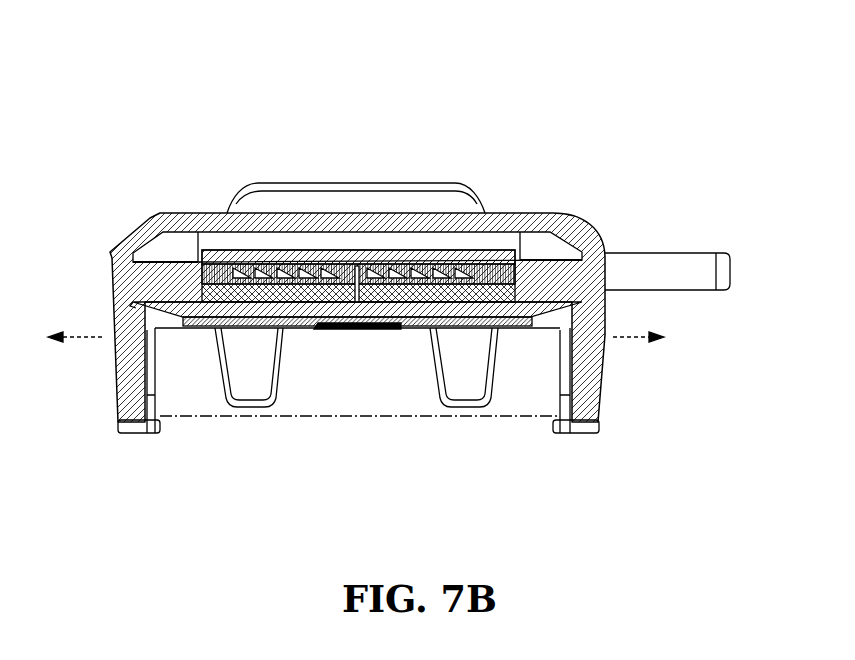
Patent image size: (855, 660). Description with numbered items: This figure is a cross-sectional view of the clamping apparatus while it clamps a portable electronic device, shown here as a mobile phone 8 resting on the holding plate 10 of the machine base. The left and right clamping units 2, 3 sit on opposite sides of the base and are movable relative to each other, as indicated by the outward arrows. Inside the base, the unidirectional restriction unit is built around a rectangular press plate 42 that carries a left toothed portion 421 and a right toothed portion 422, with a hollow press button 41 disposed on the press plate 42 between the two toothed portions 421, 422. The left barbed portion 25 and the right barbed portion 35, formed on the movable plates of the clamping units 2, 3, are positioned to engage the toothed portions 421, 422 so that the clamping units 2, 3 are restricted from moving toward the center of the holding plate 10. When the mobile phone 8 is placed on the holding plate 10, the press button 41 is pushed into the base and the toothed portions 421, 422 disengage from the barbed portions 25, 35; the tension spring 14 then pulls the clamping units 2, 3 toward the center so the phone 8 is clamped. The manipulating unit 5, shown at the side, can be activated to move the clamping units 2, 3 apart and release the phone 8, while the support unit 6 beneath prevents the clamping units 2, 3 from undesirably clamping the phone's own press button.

The left clamping unit 2 is at (120, 362).
The right clamping unit 3 is at (598, 362).
The manipulating unit 5 is at (723, 273).
The support unit 6 is at (252, 390).
The mobile phone 8 is at (487, 418).
The holding plate 10 is at (192, 320).
The tension spring 14 is at (504, 282).
The left barbed portion 25 is at (357, 270).
The right barbed portion 35 is at (367, 283).
The press button 41 is at (360, 330).
The press plate 42 is at (300, 255).
The left toothed portion 421 is at (285, 265).
The right toothed portion 422 is at (433, 272).